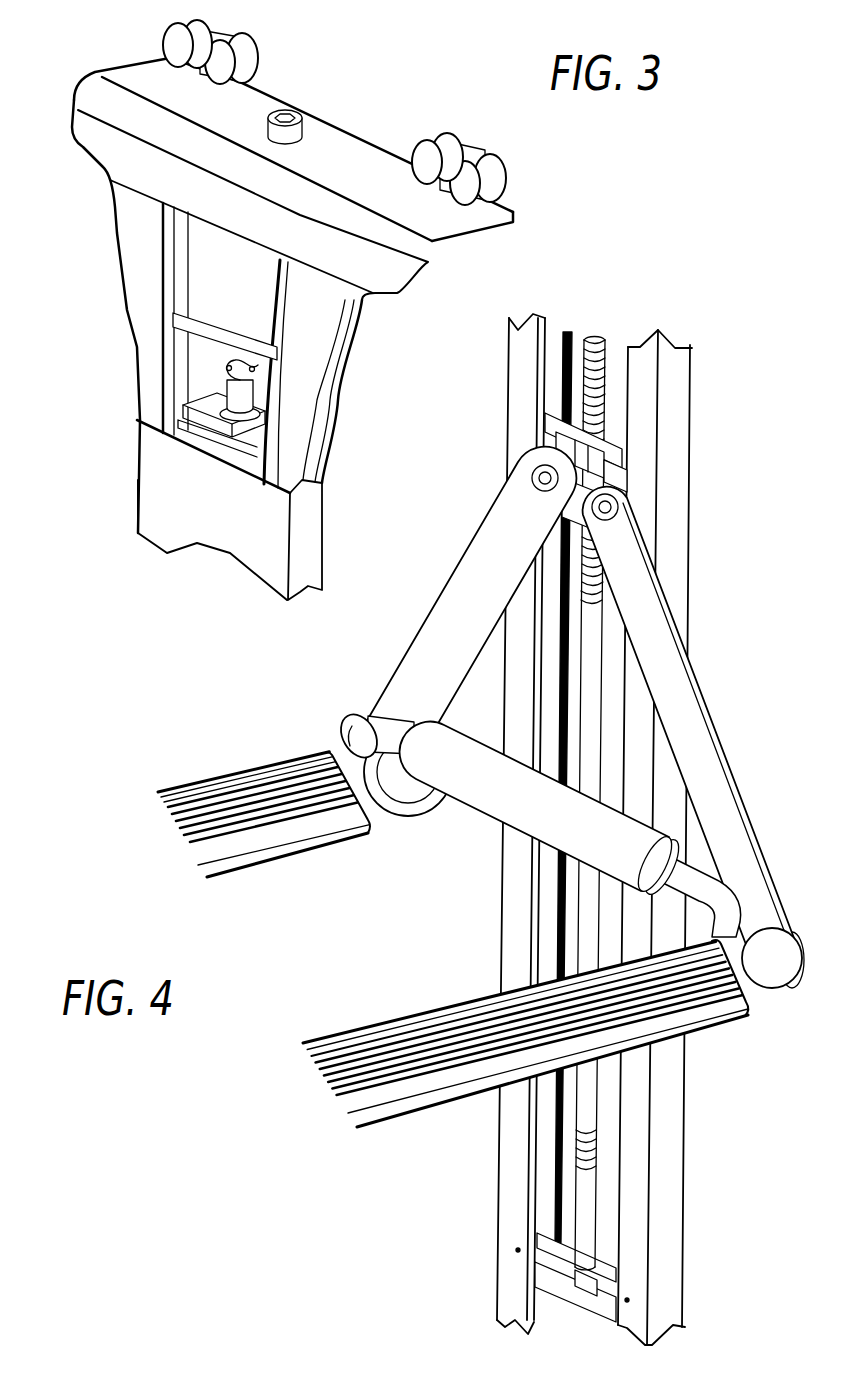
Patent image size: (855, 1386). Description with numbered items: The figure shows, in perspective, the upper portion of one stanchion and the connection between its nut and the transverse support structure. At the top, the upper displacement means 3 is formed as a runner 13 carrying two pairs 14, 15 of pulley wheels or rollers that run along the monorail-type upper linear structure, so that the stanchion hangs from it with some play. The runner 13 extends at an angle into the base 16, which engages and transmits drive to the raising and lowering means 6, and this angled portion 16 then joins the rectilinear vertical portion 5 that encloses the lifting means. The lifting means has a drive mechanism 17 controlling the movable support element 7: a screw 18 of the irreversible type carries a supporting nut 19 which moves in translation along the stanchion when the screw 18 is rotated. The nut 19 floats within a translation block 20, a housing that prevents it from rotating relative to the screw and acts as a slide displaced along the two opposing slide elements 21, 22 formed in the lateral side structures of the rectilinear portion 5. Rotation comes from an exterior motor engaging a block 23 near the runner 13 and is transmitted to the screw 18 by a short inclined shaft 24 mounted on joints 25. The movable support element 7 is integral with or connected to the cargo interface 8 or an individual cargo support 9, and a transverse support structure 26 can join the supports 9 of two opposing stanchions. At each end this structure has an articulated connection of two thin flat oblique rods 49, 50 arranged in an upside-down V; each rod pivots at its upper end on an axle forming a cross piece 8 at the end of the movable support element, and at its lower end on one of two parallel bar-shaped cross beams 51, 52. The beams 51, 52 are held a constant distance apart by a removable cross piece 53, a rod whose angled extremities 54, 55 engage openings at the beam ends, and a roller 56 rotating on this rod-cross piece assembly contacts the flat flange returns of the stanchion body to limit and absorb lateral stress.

In FIG. 3, the upper displacement means 3 is at (400, 100).
In FIG. 4, the rectilinear portion 5 is at (680, 604).
In FIG. 4, the raising and lowering means 6 is at (625, 408).
In FIG. 4, the movable support element 7 is at (633, 447).
In FIG. 4, the cargo interface 8 is at (543, 478).
In FIG. 4, the individual cargo support 9 is at (590, 707).
In FIG. 3, the runner 13 is at (383, 163).
In FIG. 3, the pair of pulley wheels or rollers 14 is at (274, 47).
In FIG. 3, the pair of pulley wheels or rollers 15 is at (528, 186).
In FIG. 3, the angled portion 16 is at (98, 262).
In FIG. 3, the drive mechanism 17 is at (355, 362).
In FIG. 4, the screw 18 is at (603, 370).
In FIG. 4, the supporting nut 19 is at (583, 483).
In FIG. 4, the translation block 20 is at (620, 478).
In FIG. 3, the slide element 21 is at (300, 542).
In FIG. 4, the slide element 21 is at (662, 1249).
In FIG. 3, the slide element 22 is at (160, 488).
In FIG. 4, the slide element 22 is at (513, 1197).
In FIG. 3, the block 23 is at (296, 113).
In FIG. 3, the inclined shaft 24 is at (243, 297).
In FIG. 3, the joints 25 is at (205, 383).
In FIG. 4, the transverse support structure 26 is at (487, 1065).
In FIG. 4, the oblique rod 49 is at (712, 822).
In FIG. 4, the oblique rod 50 is at (468, 606).
In FIG. 4, the cross beam 51 is at (330, 1090).
In FIG. 4, the cross beam 52 is at (213, 792).
In FIG. 4, the removable cross piece 53 is at (452, 815).
In FIG. 4, the angled extremity 54 is at (722, 898).
In FIG. 4, the angled extremity 55 is at (363, 738).
In FIG. 4, the roller 56 is at (503, 800).